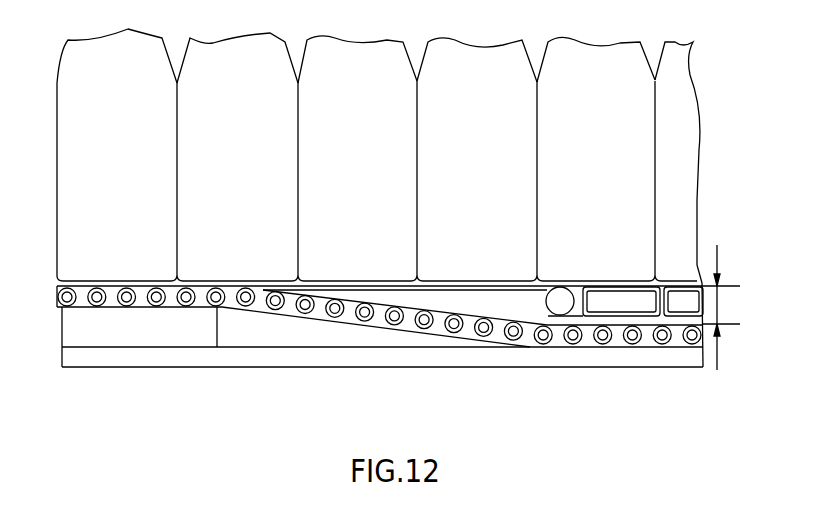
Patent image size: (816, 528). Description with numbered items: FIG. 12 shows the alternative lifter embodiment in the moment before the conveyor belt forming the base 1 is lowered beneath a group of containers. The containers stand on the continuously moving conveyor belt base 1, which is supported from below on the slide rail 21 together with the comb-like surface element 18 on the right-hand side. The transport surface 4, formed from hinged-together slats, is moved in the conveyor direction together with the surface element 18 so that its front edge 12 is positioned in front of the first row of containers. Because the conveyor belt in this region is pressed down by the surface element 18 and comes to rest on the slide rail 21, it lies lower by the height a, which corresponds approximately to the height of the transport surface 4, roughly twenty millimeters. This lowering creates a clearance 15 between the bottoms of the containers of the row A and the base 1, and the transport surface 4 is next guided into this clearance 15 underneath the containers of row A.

The row A is at (199, 55).
The base 1 is at (470, 327).
The transport surface 4 is at (620, 302).
The front edge 12 is at (443, 287).
The clearance 15 is at (260, 312).
The surface element 18 is at (102, 318).
The slide rail 21 is at (393, 356).
The height a is at (726, 303).